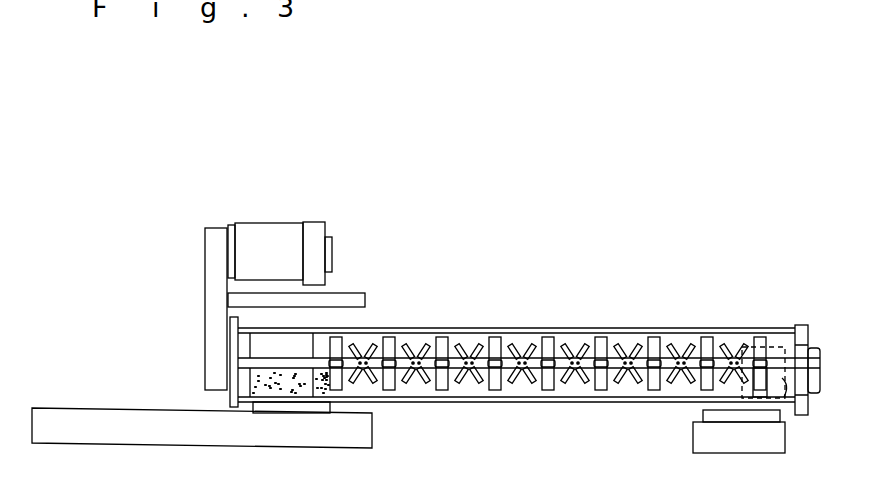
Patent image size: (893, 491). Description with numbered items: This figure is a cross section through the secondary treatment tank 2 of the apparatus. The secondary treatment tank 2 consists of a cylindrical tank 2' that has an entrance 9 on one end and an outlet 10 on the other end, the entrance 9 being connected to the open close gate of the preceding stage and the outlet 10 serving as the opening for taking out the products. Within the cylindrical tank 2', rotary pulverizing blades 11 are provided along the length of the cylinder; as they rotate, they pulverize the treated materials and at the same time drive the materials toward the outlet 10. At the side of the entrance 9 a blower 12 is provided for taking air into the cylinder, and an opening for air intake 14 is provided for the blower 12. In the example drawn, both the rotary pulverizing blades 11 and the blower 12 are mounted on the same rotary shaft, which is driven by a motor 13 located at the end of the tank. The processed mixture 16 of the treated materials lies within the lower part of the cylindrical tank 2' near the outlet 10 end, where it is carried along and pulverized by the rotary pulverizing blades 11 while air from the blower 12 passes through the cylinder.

The secondary treatment tank 2 is at (529, 319).
The cylindrical tank 2' is at (516, 291).
The entrance 9 is at (787, 415).
The outlet 10 is at (298, 343).
The rotary pulverizing blades 11 is at (495, 383).
The blower 12 is at (806, 360).
The motor 13 is at (275, 240).
The opening for air intake 14 is at (801, 346).
The processed mixture 16 is at (273, 382).